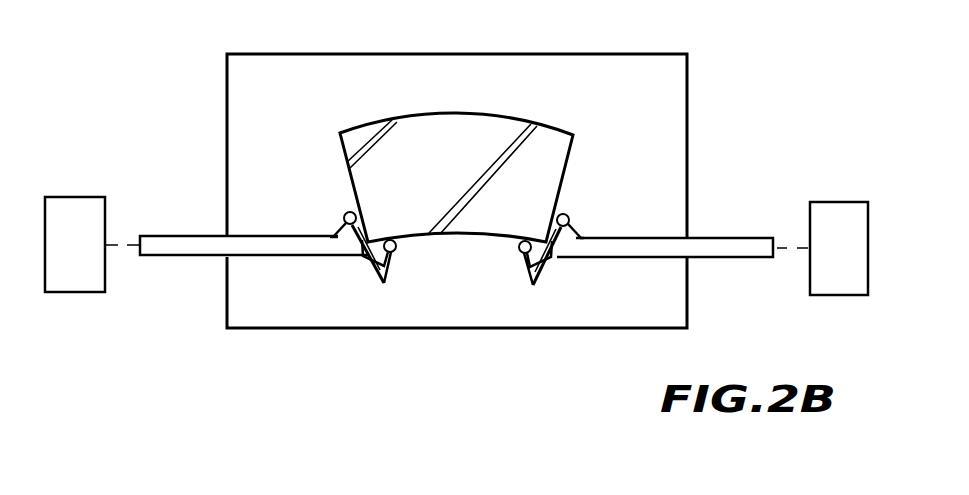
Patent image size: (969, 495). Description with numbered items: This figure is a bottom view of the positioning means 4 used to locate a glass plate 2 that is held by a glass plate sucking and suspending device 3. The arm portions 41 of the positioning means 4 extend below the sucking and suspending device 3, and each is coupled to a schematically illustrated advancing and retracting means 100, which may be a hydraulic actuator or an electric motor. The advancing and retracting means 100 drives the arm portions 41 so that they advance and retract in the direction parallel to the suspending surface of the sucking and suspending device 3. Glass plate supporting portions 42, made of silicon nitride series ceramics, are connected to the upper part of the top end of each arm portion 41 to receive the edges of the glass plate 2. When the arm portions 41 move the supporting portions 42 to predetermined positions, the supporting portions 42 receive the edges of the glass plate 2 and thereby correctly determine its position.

The glass plate 2 is at (475, 223).
The glass plate sucking and suspending device 3 is at (587, 78).
The positioning means 4 is at (213, 270).
The arm portions 41 is at (315, 258).
The glass plate supporting portions 42 is at (457, 279).
The advancing and retracting means 100 is at (70, 292).